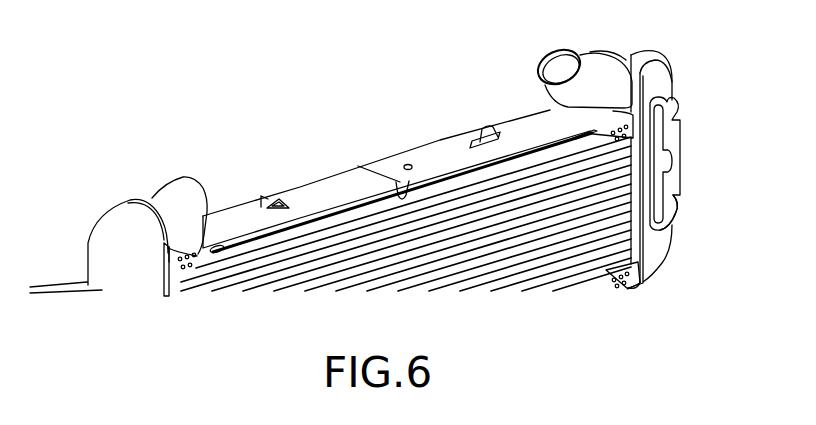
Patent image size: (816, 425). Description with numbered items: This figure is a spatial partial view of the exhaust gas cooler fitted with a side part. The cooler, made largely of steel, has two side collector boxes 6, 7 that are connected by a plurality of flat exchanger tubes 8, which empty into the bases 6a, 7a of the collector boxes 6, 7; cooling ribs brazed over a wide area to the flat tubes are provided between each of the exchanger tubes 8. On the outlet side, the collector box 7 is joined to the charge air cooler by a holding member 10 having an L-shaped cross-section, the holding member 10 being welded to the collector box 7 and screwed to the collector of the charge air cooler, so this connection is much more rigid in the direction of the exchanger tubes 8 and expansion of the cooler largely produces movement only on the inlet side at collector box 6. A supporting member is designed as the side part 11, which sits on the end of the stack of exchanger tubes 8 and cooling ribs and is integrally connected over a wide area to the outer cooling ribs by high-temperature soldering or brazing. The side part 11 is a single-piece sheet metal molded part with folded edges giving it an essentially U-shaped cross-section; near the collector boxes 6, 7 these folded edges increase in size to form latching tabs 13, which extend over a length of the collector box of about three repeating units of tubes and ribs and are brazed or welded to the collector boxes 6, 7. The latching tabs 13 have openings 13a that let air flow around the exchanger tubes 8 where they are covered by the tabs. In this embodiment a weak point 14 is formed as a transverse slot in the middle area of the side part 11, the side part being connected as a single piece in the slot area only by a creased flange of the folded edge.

The collector box 6 is at (110, 263).
The base 6a is at (170, 292).
The collector box 7 is at (652, 85).
The base 7a is at (637, 145).
The exchanger tubes 8 is at (482, 260).
The holding member 10 is at (667, 190).
The side part 11 is at (297, 186).
The latching tabs 13 is at (196, 255).
The openings 13a is at (180, 258).
The weak point 14 is at (358, 160).